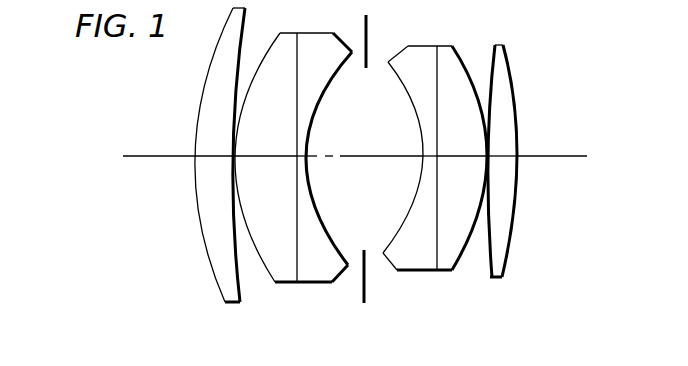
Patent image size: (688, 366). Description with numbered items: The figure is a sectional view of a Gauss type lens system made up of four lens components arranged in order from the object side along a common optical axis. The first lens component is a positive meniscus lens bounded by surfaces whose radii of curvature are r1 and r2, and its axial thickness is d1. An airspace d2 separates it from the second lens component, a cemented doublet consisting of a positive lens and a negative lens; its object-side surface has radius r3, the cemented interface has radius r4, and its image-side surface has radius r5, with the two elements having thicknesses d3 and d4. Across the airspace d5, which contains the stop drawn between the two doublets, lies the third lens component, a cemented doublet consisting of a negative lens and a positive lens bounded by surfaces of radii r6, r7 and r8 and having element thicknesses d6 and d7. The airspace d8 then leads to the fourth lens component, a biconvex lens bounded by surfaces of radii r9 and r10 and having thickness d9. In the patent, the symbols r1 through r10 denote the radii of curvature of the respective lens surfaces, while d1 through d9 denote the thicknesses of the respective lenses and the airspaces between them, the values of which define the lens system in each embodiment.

The radius of curvature of first lens surface r1 is at (219, 289).
The radius of curvature of second lens surface r2 is at (241, 288).
The radius of curvature of third lens surface r3 is at (263, 268).
The radius of curvature of fourth lens surface r4 is at (297, 277).
The radius of curvature of fifth lens surface r5 is at (336, 260).
The radius of curvature of sixth lens surface r6 is at (386, 260).
The radius of curvature of seventh lens surface r7 is at (437, 262).
The radius of curvature of eighth lens surface r8 is at (459, 262).
The radius of curvature of ninth lens surface r9 is at (489, 262).
The radius of curvature of tenth lens surface r10 is at (507, 257).
The thickness of first lens d1 is at (212, 153).
The airspace between first and second lens components d2 is at (238, 148).
The thickness of positive lens of second lens component d3 is at (270, 154).
The thickness of negative lens of second lens component d4 is at (300, 152).
The airspace between second and third lens components d5 is at (360, 154).
The thickness of negative lens of third lens component d6 is at (424, 153).
The thickness of positive lens of third lens component d7 is at (453, 154).
The airspace between third and fourth lens components d8 is at (487, 150).
The thickness of fourth lens d9 is at (505, 154).